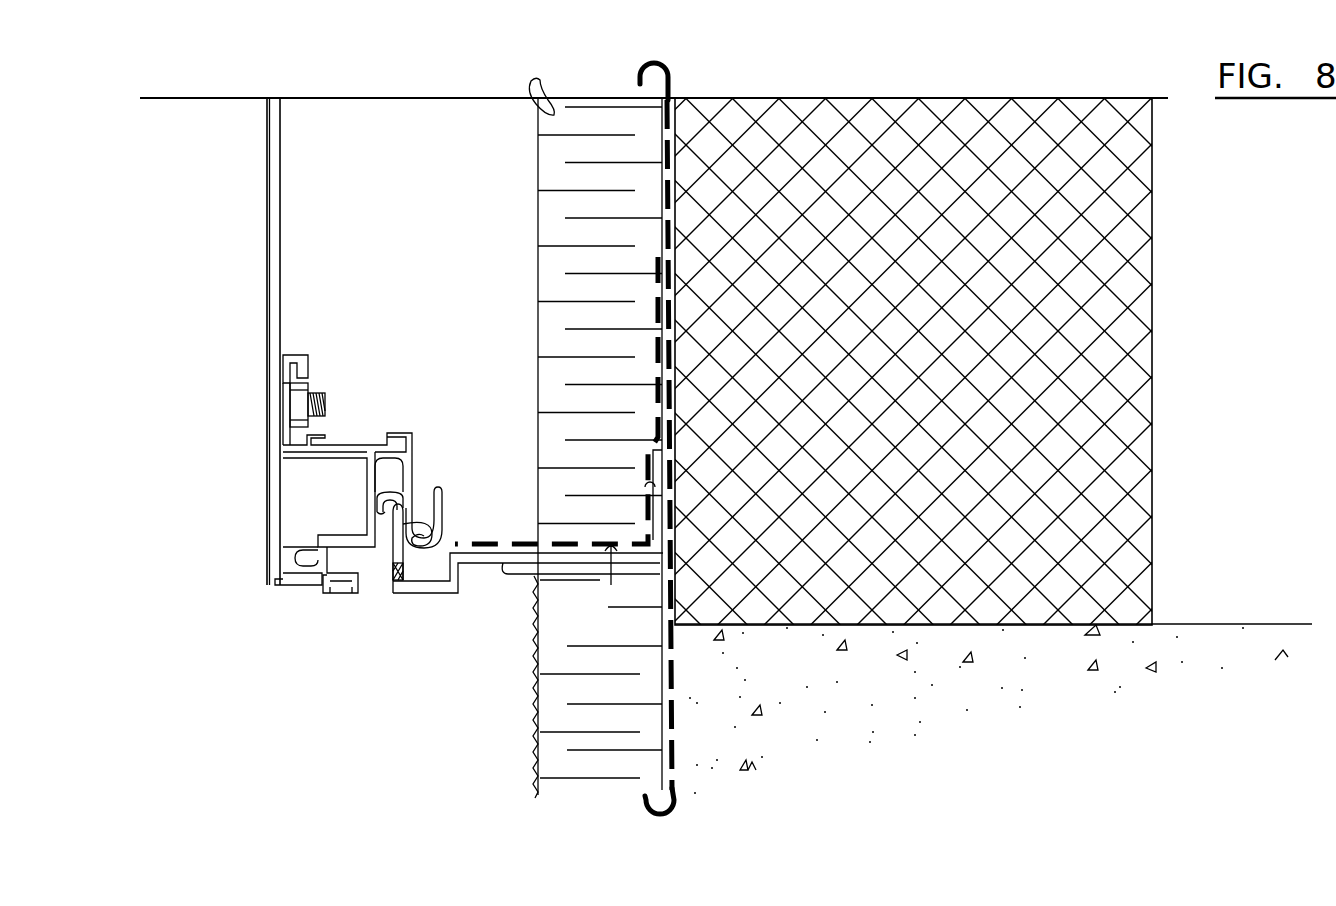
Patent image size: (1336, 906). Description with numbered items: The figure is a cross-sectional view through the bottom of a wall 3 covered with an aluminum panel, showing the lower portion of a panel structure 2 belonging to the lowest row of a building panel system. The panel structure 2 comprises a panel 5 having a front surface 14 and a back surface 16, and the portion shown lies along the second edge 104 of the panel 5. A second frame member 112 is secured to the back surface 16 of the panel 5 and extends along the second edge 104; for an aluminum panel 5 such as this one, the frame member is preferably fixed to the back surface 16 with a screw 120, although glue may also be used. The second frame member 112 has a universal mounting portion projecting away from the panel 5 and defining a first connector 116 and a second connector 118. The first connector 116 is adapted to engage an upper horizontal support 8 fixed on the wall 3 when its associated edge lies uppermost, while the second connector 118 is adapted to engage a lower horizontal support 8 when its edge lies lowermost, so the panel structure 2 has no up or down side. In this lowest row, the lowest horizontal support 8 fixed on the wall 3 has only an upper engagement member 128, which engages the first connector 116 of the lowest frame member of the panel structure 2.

The panel structure 2 is at (197, 284).
The wall 3 is at (1152, 163).
The panel 5 is at (268, 136).
The horizontal support 8 is at (420, 594).
The front surface 14 is at (267, 168).
The back surface 16 is at (280, 166).
The second edge 104 is at (282, 583).
The second frame member 112 is at (353, 443).
The first connector 116 is at (403, 475).
The second connector 118 is at (428, 508).
The screw 120 is at (321, 398).
The upper engagement member 128 is at (397, 551).